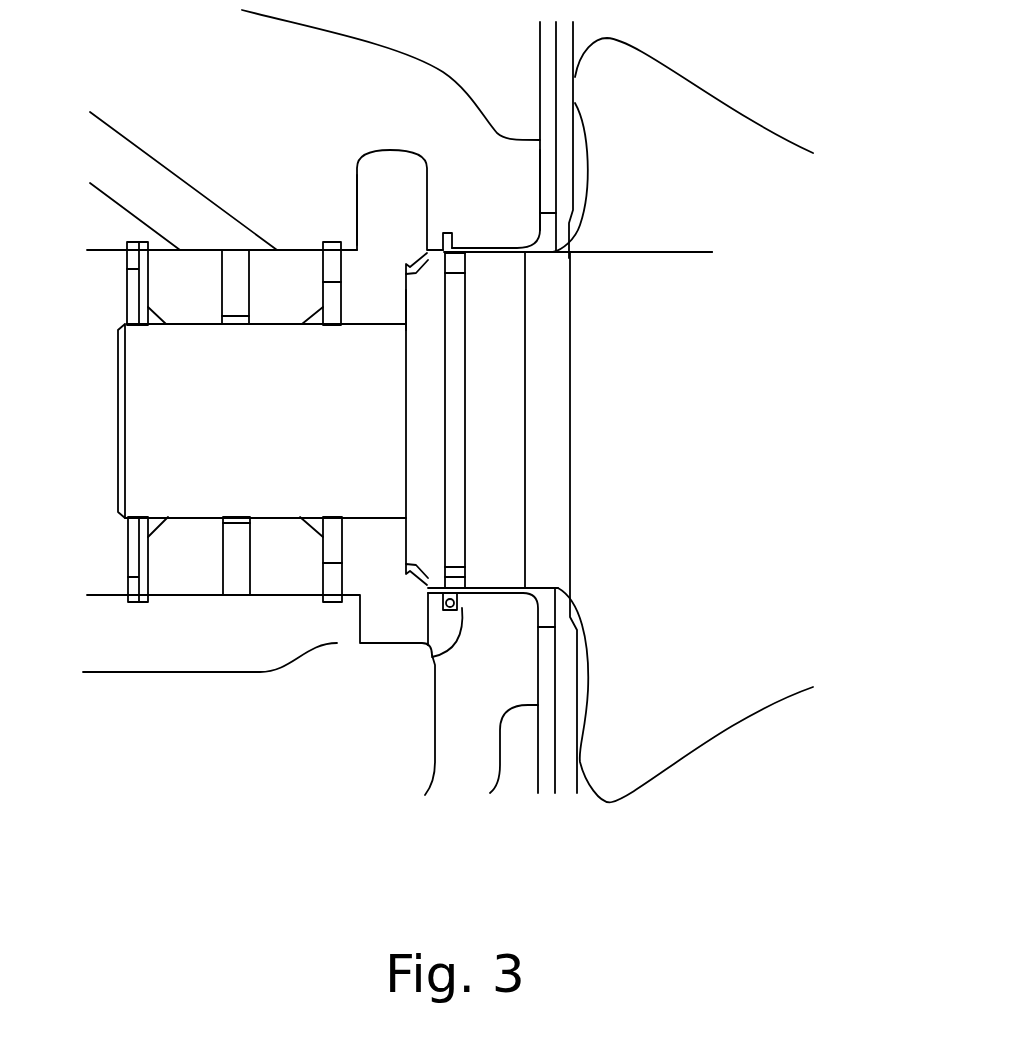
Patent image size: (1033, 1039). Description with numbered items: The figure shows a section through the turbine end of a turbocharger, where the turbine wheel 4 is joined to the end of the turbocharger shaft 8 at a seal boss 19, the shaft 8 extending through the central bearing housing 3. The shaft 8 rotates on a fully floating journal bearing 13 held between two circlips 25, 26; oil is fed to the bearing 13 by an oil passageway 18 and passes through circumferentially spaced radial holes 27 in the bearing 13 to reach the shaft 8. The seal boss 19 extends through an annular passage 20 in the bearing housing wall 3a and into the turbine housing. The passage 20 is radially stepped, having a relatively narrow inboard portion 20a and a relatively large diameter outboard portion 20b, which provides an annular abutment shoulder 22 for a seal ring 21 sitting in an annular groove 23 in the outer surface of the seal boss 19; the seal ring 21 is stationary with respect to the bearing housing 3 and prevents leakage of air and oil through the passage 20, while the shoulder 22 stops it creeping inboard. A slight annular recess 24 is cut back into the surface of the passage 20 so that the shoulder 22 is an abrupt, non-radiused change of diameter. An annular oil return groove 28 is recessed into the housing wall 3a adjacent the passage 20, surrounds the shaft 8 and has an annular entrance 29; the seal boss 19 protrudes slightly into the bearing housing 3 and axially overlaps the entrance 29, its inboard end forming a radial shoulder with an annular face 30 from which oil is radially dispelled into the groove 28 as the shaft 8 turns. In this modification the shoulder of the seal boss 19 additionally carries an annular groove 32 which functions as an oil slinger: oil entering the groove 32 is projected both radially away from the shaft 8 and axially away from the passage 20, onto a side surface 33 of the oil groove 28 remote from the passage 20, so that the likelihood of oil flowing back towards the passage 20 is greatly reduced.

The central bearing housing 3 is at (162, 63).
The bearing housing wall 3a is at (467, 698).
The turbine wheel 4 is at (682, 712).
The turbocharger shaft 8 is at (160, 448).
The journal bearing 13 is at (165, 277).
The oil passageway 18 is at (127, 183).
The seal boss 19 is at (512, 492).
The annular passage 20 is at (493, 252).
The inboard portion 20a is at (440, 233).
The outboard portion 20b is at (525, 258).
The seal ring 21 is at (462, 258).
The annular abutment shoulder 22 is at (455, 238).
The annular groove 23 is at (460, 573).
The annular recess 24 is at (432, 657).
The circlip 25 is at (133, 597).
The circlip 26 is at (330, 588).
The radial holes 27 is at (235, 575).
The annular oil return groove 28 is at (377, 167).
The annular entrance 29 is at (380, 253).
The annular face 30 is at (408, 269).
The annular groove 32 is at (410, 266).
The side surface 33 is at (355, 192).